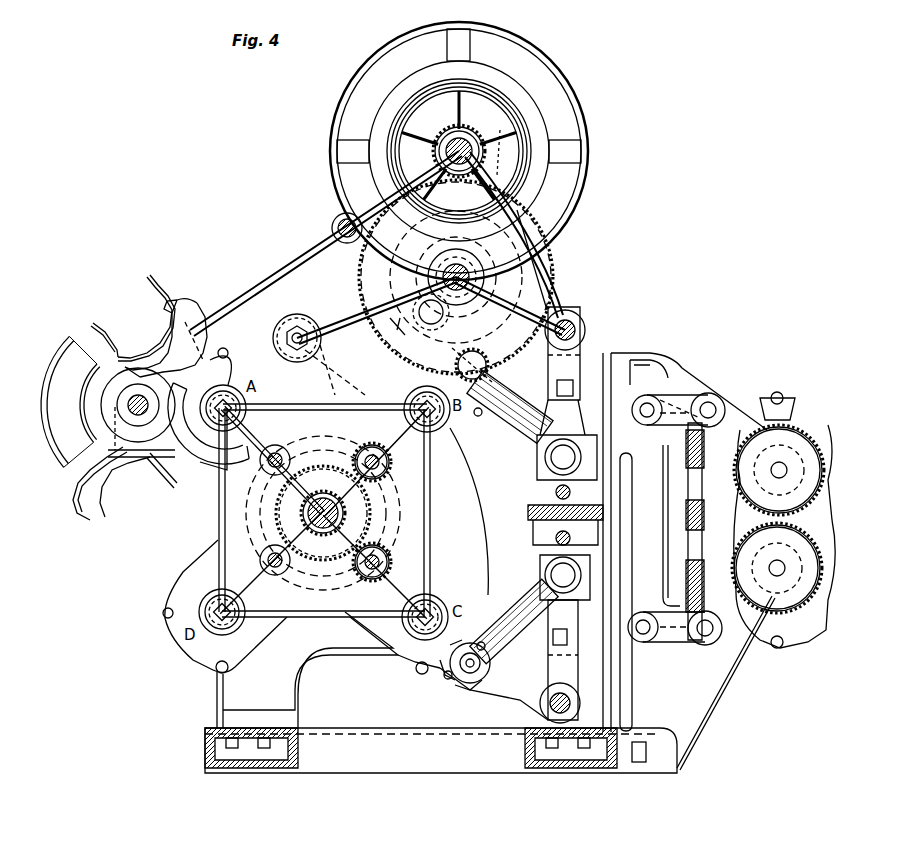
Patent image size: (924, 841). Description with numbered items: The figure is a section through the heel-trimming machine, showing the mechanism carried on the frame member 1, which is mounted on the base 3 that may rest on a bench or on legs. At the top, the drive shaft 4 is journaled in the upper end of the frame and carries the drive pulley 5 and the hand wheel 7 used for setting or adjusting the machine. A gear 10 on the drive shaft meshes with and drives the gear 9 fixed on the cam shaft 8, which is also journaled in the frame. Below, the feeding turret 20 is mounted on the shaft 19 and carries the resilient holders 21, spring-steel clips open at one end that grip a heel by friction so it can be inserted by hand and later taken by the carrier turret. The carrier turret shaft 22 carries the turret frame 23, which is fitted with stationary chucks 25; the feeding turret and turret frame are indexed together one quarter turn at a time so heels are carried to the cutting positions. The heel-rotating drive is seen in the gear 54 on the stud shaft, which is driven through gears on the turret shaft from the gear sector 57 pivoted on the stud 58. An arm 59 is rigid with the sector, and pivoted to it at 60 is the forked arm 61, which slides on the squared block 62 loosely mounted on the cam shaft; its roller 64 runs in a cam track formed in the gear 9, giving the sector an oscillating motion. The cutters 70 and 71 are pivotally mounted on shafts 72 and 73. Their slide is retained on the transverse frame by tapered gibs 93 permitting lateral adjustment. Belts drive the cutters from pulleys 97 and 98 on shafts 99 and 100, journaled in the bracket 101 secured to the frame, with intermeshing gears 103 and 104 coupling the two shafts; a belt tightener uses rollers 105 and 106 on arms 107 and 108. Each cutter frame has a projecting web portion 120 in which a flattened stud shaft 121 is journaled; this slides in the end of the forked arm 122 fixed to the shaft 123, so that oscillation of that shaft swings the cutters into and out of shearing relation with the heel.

The frame member 1 is at (245, 688).
The base 3 is at (358, 752).
The drive shaft 4 is at (468, 150).
The drive pulley 5 is at (552, 80).
The hand wheel 7 is at (505, 102).
The cam shaft 8 is at (466, 280).
The gear 9 is at (540, 224).
The gear 10 is at (487, 152).
The shaft 19 is at (138, 395).
The feeding turret 20 is at (197, 318).
The resilient holder 21 is at (105, 323).
The carrier turret shaft 22 is at (308, 518).
The turret frame 23 is at (314, 606).
The stationary chuck 25 is at (232, 386).
The gear 54 is at (388, 460).
The gear sector 57 is at (340, 428).
The stud 58 is at (298, 330).
The arm 59 is at (342, 356).
The pivot 60 is at (448, 372).
The forked arm 61 is at (389, 323).
The squared block 62 is at (462, 266).
The roller 64 is at (458, 317).
The cutter 70 is at (512, 428).
The cutter 71 is at (510, 600).
The shaft 72 is at (556, 462).
The shaft 73 is at (553, 568).
The tapered gib 93 is at (690, 497).
The pulley 97 is at (770, 636).
The pulley 98 is at (790, 455).
The shaft 99 is at (780, 472).
The shaft 100 is at (780, 580).
The bracket 101 is at (670, 378).
The gear 103 is at (828, 428).
The gear 104 is at (814, 640).
The roller 105 is at (716, 645).
The roller 106 is at (728, 402).
The arm 107 is at (665, 640).
The arm 108 is at (688, 400).
The web portion 120 is at (550, 392).
The stud shaft 121 is at (570, 380).
The forked arm 122 is at (560, 685).
The shaft 123 is at (580, 700).